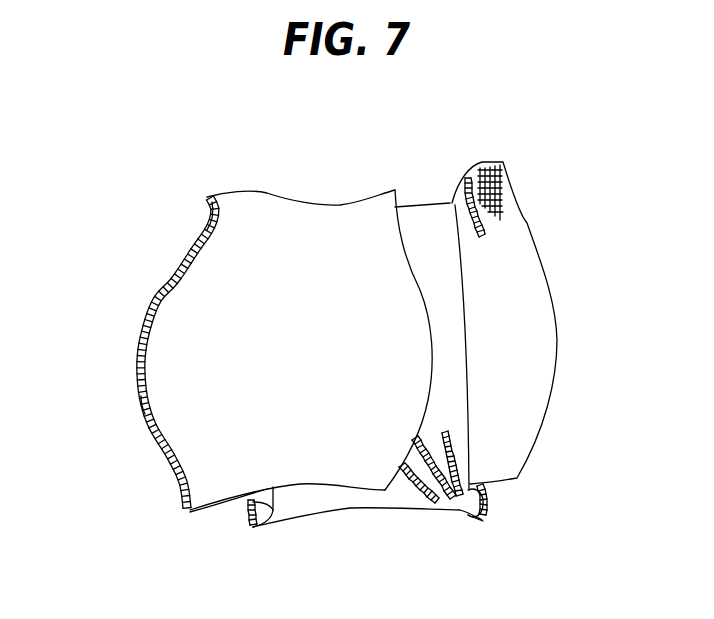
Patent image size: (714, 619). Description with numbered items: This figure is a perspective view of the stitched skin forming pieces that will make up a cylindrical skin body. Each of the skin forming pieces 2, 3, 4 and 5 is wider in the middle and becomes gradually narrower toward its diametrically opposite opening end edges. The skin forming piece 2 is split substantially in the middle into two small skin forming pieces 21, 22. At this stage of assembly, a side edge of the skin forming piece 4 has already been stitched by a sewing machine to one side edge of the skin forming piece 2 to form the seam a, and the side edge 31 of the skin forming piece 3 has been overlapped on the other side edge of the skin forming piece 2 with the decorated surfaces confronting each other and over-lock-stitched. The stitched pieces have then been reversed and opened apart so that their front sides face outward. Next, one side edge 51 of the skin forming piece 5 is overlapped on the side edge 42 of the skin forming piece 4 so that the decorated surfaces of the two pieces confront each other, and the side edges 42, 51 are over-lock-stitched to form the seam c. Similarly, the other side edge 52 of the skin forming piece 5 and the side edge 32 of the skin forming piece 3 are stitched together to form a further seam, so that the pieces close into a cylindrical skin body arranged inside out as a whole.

The skin forming piece 2 is at (404, 190).
The small skin forming piece 21 is at (393, 497).
The small skin forming piece 22 is at (433, 233).
The skin forming piece 3 is at (547, 320).
The side edge of skin forming piece 3 31 is at (490, 490).
The side edge of skin forming piece 3 32 is at (527, 223).
The skin forming piece 4 is at (237, 500).
The side edge of skin forming piece 4 42 is at (200, 242).
The skin forming piece 5 is at (267, 222).
The side edge of skin forming piece 5 51 is at (157, 297).
The side edge of skin forming piece 5 52 is at (392, 245).
The seam a is at (490, 512).
The seam c is at (145, 406).